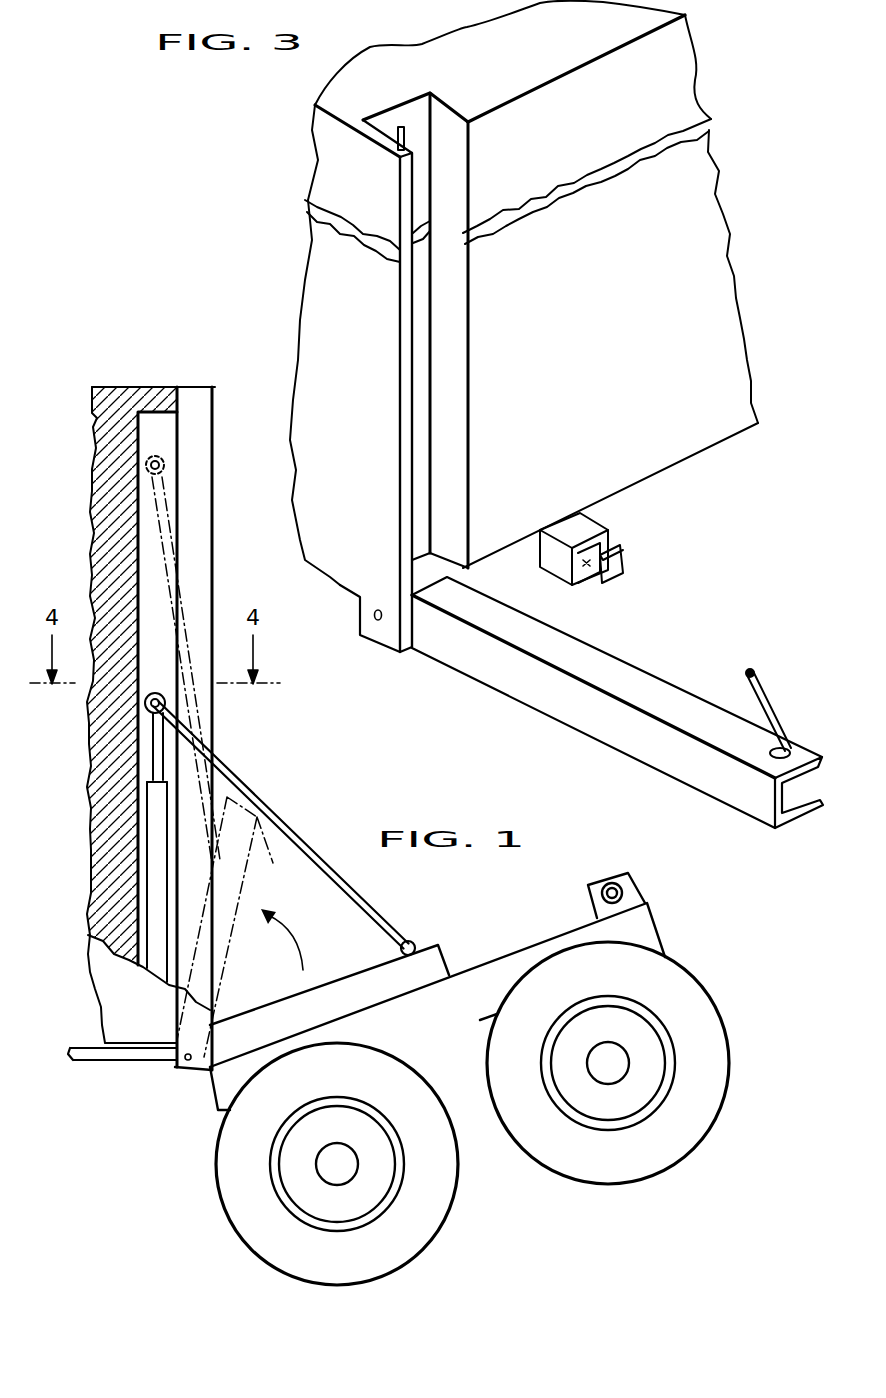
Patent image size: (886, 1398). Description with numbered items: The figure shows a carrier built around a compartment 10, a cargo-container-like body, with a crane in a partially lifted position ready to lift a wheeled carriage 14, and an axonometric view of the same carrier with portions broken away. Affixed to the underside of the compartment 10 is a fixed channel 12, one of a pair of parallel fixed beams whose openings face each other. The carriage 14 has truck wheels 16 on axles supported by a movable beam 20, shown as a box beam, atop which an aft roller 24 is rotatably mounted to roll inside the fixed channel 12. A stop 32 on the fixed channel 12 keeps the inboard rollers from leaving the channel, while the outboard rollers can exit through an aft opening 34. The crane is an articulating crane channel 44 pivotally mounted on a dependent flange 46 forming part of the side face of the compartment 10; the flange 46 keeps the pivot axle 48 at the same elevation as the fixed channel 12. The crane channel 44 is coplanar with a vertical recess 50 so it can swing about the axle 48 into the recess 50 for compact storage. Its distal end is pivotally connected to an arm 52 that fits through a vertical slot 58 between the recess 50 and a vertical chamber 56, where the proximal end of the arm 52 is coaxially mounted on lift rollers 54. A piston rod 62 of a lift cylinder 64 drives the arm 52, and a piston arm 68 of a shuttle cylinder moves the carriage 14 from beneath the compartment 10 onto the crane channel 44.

In FIG. 3, the compartment 10 is at (705, 225).
In FIG. 1, the compartment 10 is at (120, 387).
In FIG. 3, the fixed channel 12 is at (585, 522).
In FIG. 1, the carriage 14 is at (504, 1050).
In FIG. 1, the truck wheel 16 is at (552, 1167).
In FIG. 1, the movable beam 20 is at (542, 937).
In FIG. 1, the aft roller 24 is at (608, 882).
In FIG. 3, the stop 32 is at (620, 560).
In FIG. 3, the aft opening 34 is at (585, 566).
In FIG. 3, the crane channel 44 is at (557, 700).
In FIG. 1, the crane channel 44 is at (438, 943).
In FIG. 3, the dependent flange 46 is at (372, 637).
In FIG. 1, the dependent flange 46 is at (177, 1077).
In FIG. 3, the axle 48 is at (380, 620).
In FIG. 1, the axle 48 is at (202, 1073).
In FIG. 3, the vertical recess 50 is at (448, 408).
In FIG. 1, the vertical recess 50 is at (198, 424).
In FIG. 3, the arm 52 is at (768, 692).
In FIG. 1, the arm 52 is at (290, 823).
In FIG. 1, the lift roller 54 is at (163, 453).
In FIG. 1, the vertical chamber 56 is at (148, 568).
In FIG. 3, the vertical slot 58 is at (403, 127).
In FIG. 1, the piston rod 62 is at (155, 768).
In FIG. 1, the lift cylinder 64 is at (158, 855).
In FIG. 1, the piston arm 68 is at (92, 1060).